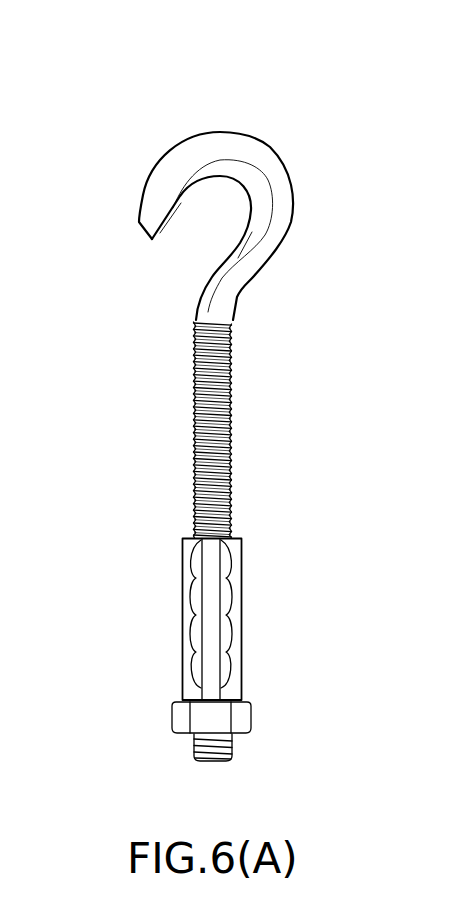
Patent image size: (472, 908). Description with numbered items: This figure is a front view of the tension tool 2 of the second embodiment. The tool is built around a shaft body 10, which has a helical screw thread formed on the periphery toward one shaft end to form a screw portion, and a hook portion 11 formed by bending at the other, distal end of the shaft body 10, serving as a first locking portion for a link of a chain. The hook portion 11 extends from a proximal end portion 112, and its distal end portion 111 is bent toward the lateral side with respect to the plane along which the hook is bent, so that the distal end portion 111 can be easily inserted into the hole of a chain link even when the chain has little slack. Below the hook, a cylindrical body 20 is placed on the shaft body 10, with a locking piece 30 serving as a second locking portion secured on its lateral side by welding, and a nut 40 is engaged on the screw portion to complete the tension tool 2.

The tension tool 2 is at (297, 122).
The shaft body 10 is at (220, 308).
The hook portion 11 is at (283, 201).
The distal end portion 111 is at (142, 220).
The proximal end portion 112 is at (218, 293).
The cylindrical body 20 is at (235, 603).
The locking piece 30 is at (210, 617).
The nut 40 is at (217, 720).